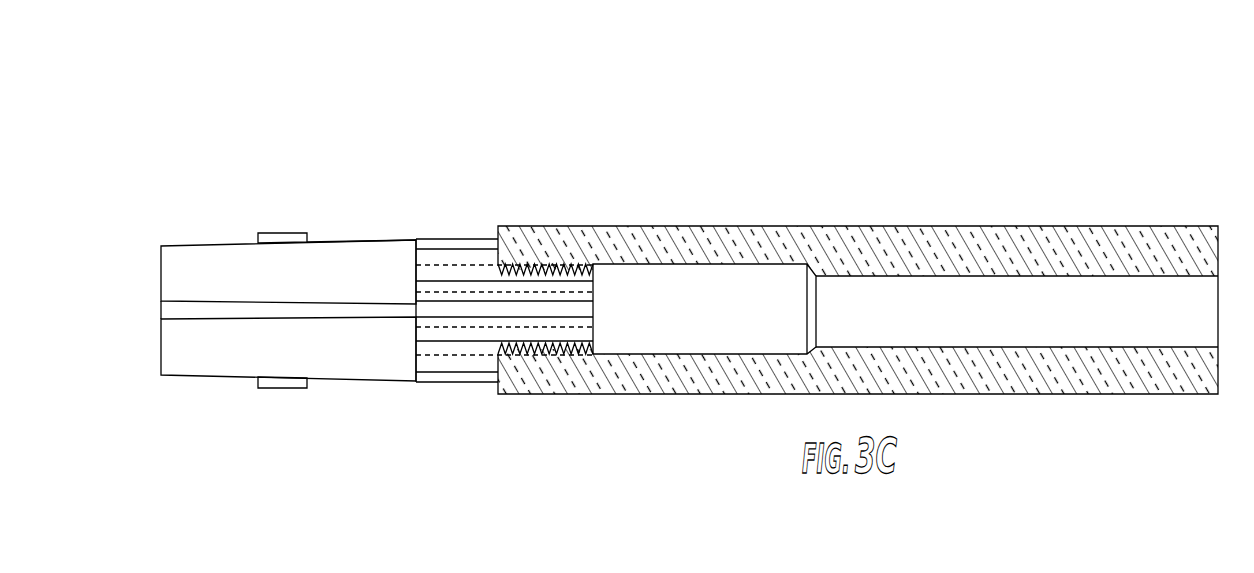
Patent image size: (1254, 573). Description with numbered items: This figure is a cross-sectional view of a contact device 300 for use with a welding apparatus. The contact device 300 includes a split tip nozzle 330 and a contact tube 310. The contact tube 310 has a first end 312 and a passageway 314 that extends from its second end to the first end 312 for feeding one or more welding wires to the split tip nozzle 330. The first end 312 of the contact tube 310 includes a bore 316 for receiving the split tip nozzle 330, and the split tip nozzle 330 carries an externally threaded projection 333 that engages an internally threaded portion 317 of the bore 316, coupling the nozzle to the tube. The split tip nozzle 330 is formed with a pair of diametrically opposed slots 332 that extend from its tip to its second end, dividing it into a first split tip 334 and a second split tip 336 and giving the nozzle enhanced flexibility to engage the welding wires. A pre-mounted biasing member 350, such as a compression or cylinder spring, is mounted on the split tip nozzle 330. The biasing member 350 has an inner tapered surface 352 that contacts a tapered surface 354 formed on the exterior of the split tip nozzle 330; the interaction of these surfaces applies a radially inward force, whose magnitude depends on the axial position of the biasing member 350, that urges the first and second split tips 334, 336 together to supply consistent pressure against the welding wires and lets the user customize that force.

The contact device 300 is at (231, 100).
The contact tube 310 is at (1178, 227).
The first end 312 is at (637, 236).
The passageway 314 is at (1013, 298).
The bore 316 is at (515, 285).
The internally threaded portion 317 is at (557, 348).
The externally threaded projection 333 is at (545, 309).
The split tip nozzle 330 is at (180, 245).
The slots 332 is at (200, 316).
The first split tip 334 is at (222, 251).
The second split tip 336 is at (178, 356).
The pre-mounted biasing member 350 is at (282, 388).
The inner tapered surface 352 is at (280, 242).
The tapered surface 354 is at (347, 240).